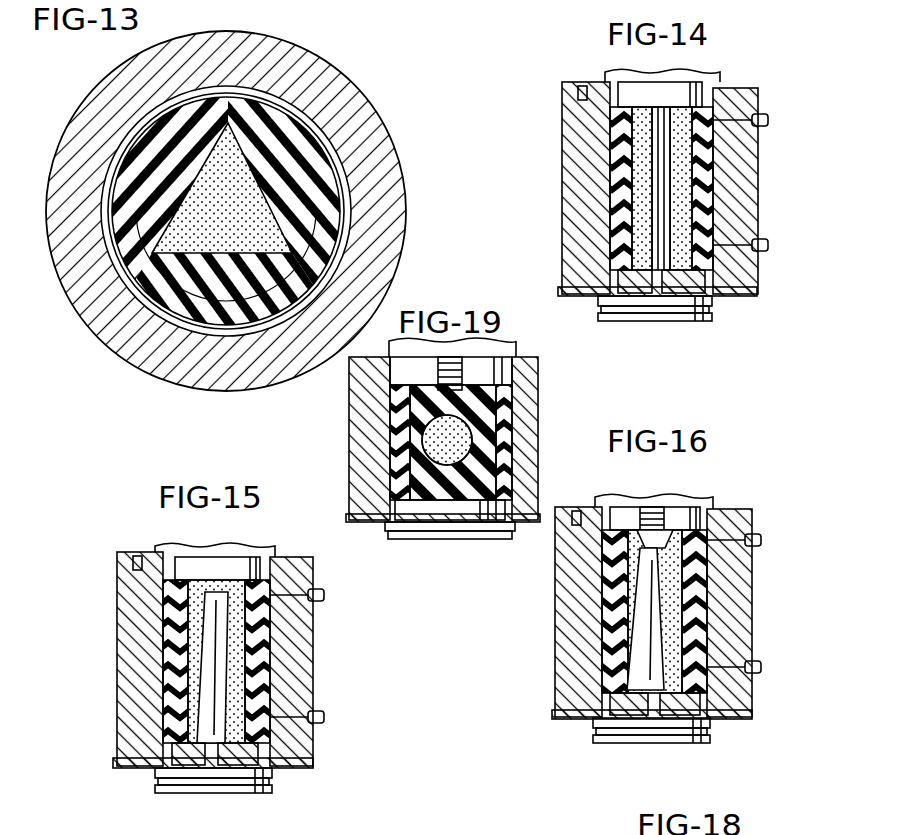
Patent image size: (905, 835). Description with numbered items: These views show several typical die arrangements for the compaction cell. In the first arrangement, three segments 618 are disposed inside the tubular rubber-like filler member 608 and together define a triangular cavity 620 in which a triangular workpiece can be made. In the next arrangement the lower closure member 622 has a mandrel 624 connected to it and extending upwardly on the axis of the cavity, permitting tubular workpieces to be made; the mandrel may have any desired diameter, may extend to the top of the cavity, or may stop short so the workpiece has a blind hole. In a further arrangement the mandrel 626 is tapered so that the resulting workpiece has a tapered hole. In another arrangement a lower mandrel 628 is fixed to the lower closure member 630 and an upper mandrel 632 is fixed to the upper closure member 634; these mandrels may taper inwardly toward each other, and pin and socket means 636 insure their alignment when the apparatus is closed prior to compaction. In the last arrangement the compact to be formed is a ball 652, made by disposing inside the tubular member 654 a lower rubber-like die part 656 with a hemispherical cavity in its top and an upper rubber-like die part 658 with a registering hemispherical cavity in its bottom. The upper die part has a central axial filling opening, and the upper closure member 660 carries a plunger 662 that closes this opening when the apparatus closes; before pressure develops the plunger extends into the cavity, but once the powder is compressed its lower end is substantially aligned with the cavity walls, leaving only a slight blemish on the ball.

In FIG. 13, the tubular rubber-like filler member 608 is at (325, 178).
In FIG. 13, the segments 618 is at (305, 203).
In FIG. 13, the triangular core 620 is at (278, 234).
In FIG. 14, the mandrel 624 is at (663, 185).
In FIG. 14, the lower closure member 622 is at (712, 308).
In FIG. 15, the mandrel 626 is at (222, 660).
In FIG. 16, the upper closure member 634 is at (697, 498).
In FIG. 16, the upper mandrel 632 is at (684, 555).
In FIG. 16, the pin and socket means 636 is at (672, 585).
In FIG. 16, the lower mandrel 628 is at (658, 638).
In FIG. 16, the lower closure member 630 is at (705, 736).
In FIG. 19, the upper rubber-like die part 658 is at (487, 365).
In FIG. 19, the tubular member 654 is at (505, 393).
In FIG. 19, the ball 652 is at (510, 417).
In FIG. 19, the lower rubber-like die part 656 is at (445, 492).
In FIG. 19, the upper closure member 660 is at (420, 372).
In FIG. 19, the plunger 662 is at (405, 410).